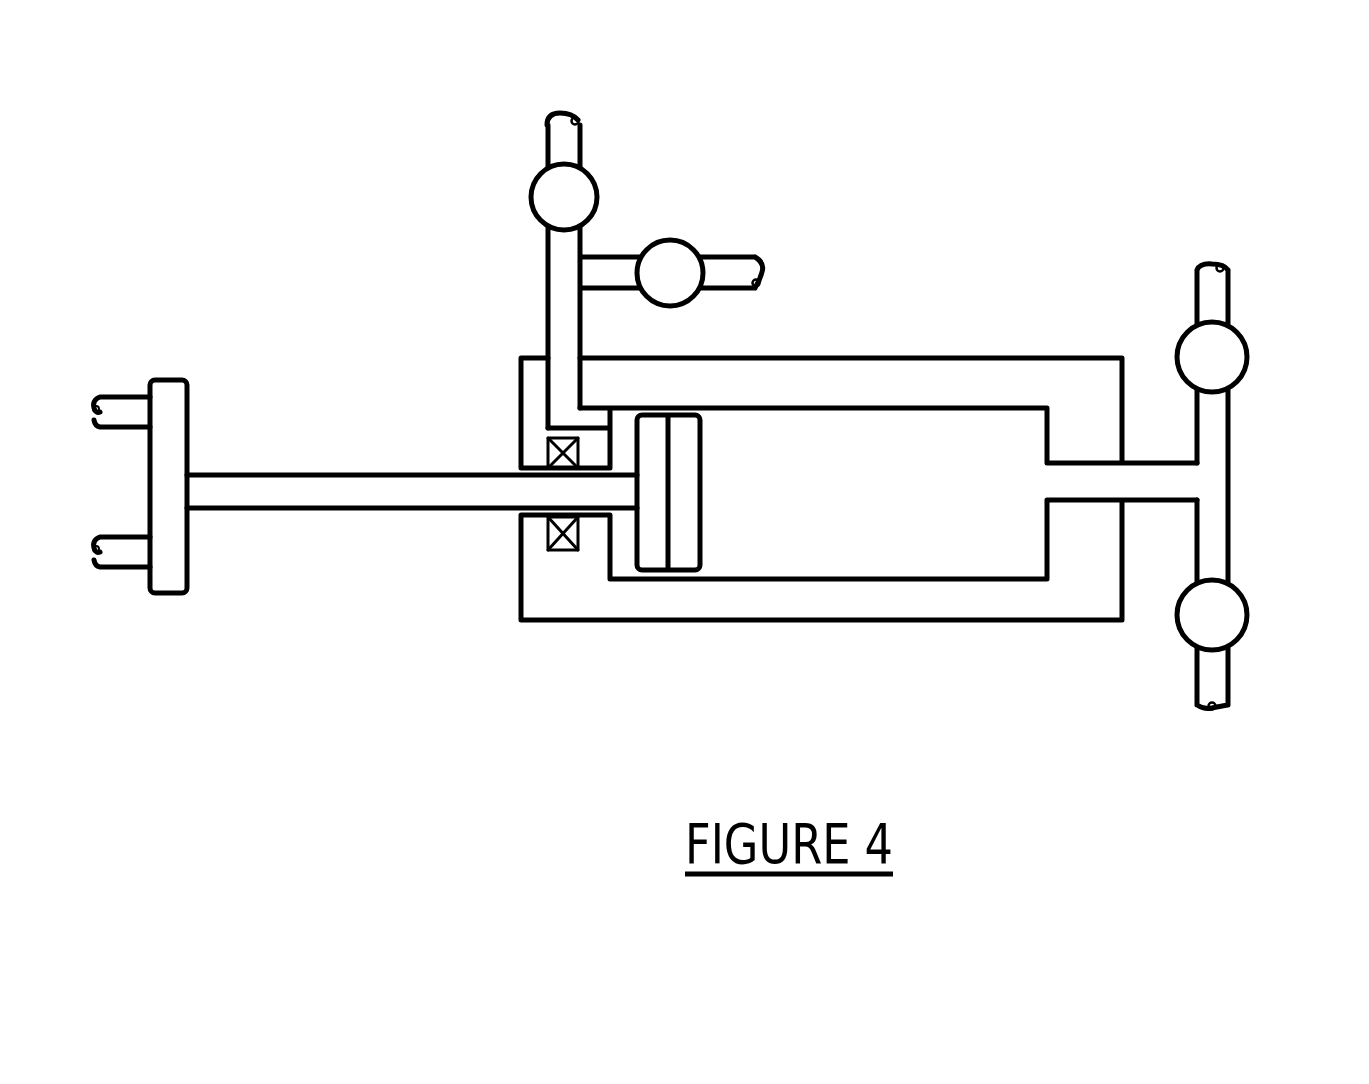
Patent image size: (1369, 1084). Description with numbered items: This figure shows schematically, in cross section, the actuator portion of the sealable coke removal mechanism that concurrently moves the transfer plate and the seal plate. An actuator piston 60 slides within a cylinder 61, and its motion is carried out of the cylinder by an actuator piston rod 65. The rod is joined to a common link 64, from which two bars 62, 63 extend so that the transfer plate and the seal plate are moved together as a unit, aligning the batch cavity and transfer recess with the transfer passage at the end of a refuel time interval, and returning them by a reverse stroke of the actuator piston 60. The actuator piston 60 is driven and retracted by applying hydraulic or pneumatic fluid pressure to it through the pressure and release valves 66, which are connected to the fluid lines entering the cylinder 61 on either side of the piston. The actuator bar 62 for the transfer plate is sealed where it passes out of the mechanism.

The actuator piston 60 is at (682, 552).
The cylinder 61 is at (960, 580).
The bar 62 is at (120, 407).
The bar 63 is at (133, 553).
The common link 64 is at (167, 453).
The actuator piston rod 65 is at (388, 492).
The pressure and release valves 66 is at (1185, 332).